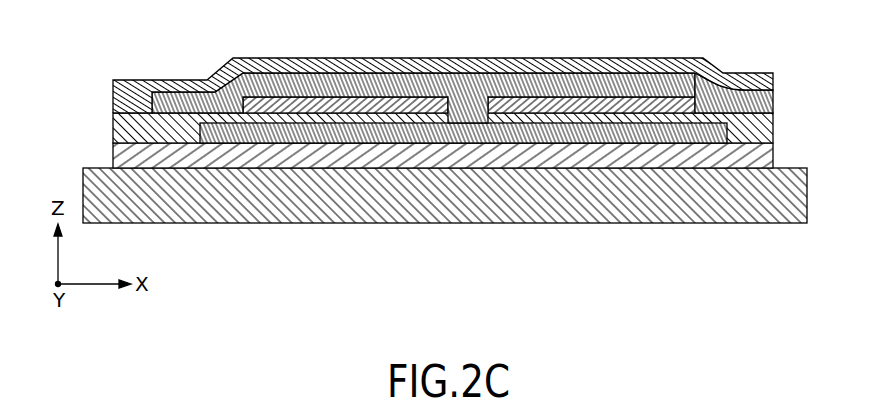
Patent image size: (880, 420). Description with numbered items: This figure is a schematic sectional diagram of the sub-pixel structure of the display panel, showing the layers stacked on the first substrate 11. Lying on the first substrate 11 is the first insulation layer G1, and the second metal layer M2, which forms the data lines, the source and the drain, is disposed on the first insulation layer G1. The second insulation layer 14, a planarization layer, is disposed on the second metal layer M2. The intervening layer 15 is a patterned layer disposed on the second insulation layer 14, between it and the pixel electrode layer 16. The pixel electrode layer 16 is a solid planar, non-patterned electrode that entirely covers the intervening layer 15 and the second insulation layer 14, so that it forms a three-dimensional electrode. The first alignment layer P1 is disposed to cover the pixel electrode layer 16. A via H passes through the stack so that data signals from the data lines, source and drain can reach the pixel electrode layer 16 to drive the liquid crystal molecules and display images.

The first substrate 11 is at (800, 210).
The first insulation layer G1 is at (765, 155).
The second insulation layer 14 is at (755, 125).
The intervening layer 15 is at (601, 72).
The pixel electrode layer 16 is at (765, 100).
The second metal layer M2 is at (223, 88).
The first alignment layer P1 is at (770, 73).
The via H is at (466, 84).